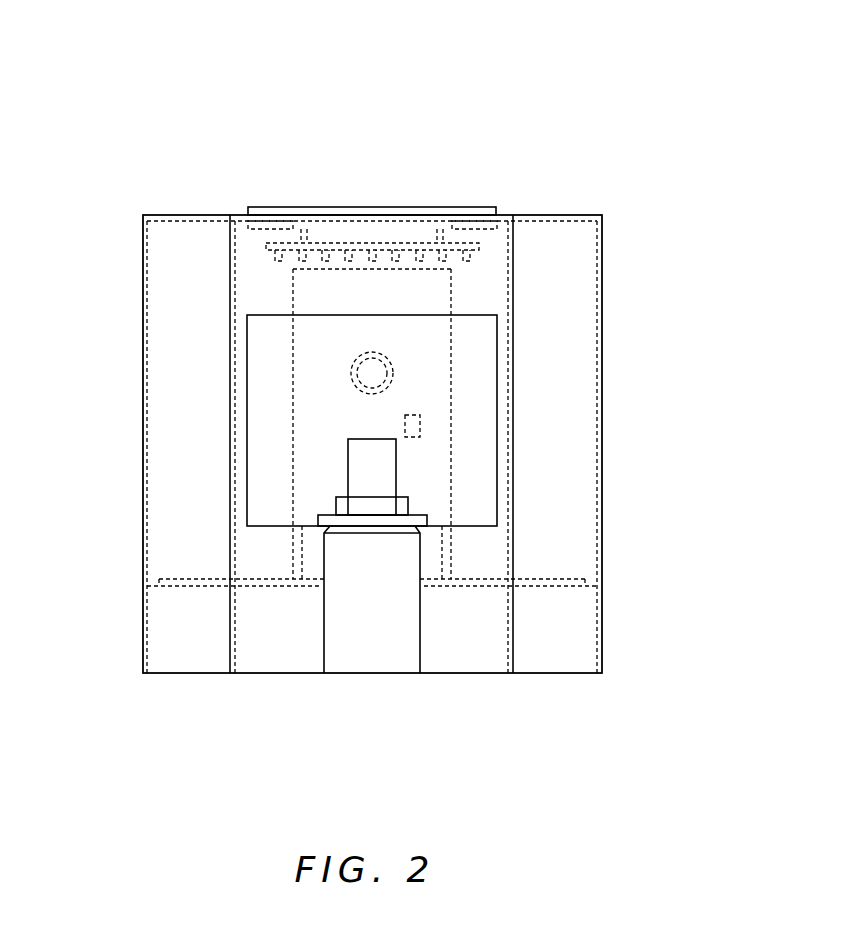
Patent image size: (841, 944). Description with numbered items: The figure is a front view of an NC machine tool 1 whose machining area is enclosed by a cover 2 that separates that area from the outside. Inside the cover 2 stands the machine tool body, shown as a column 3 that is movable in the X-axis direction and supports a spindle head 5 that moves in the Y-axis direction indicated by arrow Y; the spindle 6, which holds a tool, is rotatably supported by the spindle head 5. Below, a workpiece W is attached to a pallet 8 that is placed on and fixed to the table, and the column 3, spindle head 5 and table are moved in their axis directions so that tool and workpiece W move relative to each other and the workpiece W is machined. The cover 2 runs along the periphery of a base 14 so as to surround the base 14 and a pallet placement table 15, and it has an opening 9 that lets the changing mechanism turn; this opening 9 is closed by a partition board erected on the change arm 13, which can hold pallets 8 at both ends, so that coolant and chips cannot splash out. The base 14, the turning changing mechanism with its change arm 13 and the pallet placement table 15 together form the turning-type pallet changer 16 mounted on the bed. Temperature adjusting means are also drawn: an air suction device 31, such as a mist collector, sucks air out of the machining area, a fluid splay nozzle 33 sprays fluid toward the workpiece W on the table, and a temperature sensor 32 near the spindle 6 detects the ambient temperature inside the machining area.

The NC machine tool 1 is at (104, 53).
The cover 2 is at (163, 217).
The column 3 is at (293, 292).
The spindle head 5 is at (378, 352).
The spindle 6 is at (360, 360).
The pallet 8 is at (343, 505).
The opening 9 is at (243, 456).
The change arm 13 is at (327, 521).
The base 14 is at (193, 648).
The pallet placement table 15 is at (395, 663).
The pallet changer 16 is at (432, 638).
The air suction device 31 is at (482, 224).
The temperature sensor 32 is at (418, 418).
The fluid splay nozzle 33 is at (470, 256).
The workpiece W is at (352, 440).
The Y-axis direction Y is at (71, 333).